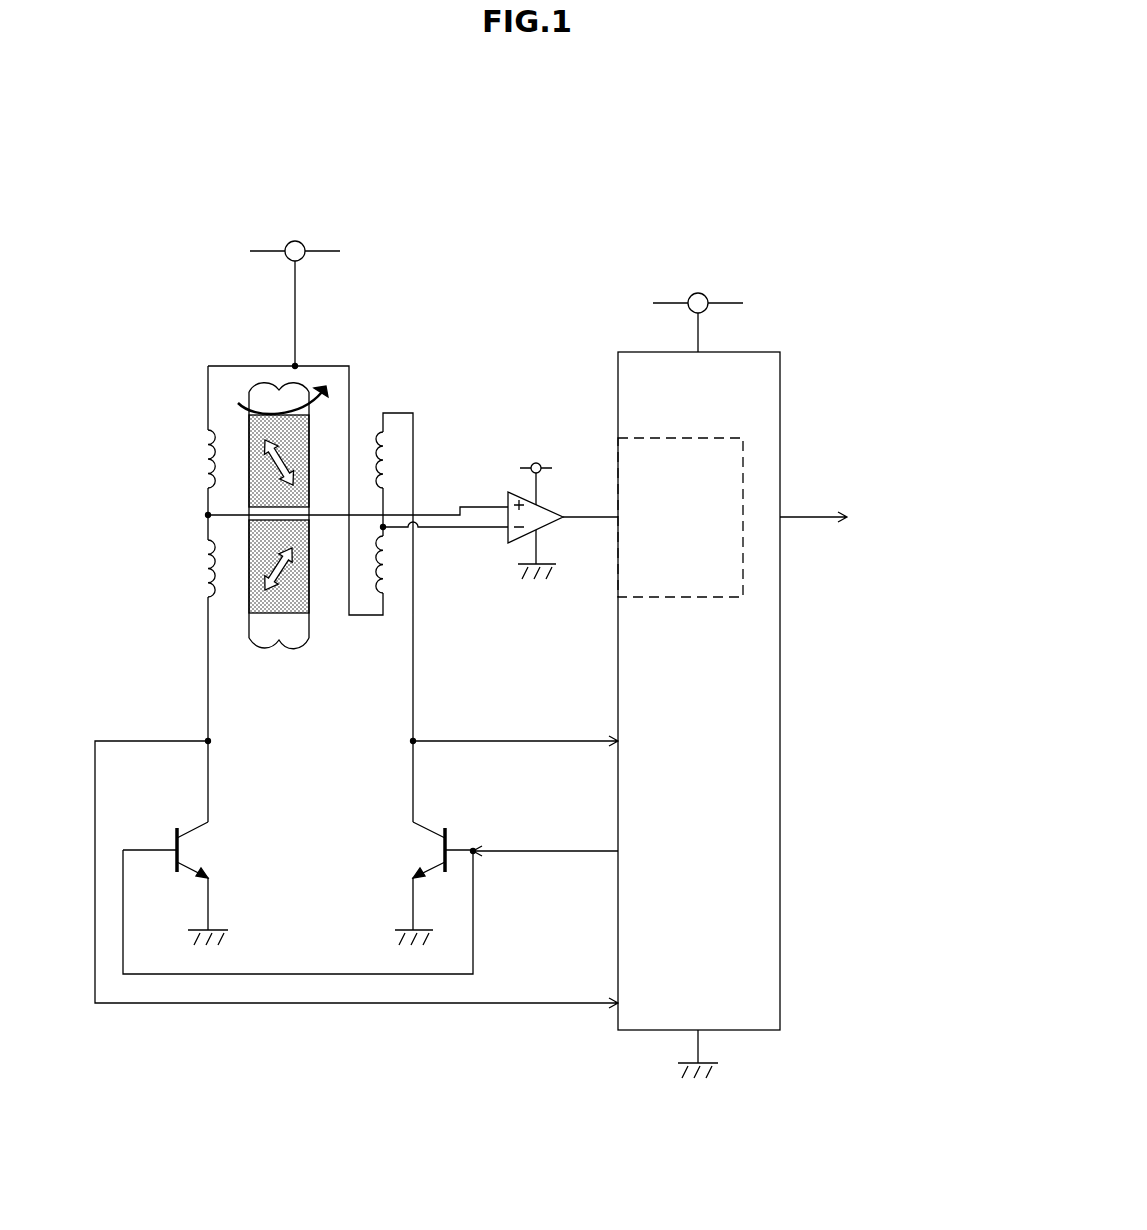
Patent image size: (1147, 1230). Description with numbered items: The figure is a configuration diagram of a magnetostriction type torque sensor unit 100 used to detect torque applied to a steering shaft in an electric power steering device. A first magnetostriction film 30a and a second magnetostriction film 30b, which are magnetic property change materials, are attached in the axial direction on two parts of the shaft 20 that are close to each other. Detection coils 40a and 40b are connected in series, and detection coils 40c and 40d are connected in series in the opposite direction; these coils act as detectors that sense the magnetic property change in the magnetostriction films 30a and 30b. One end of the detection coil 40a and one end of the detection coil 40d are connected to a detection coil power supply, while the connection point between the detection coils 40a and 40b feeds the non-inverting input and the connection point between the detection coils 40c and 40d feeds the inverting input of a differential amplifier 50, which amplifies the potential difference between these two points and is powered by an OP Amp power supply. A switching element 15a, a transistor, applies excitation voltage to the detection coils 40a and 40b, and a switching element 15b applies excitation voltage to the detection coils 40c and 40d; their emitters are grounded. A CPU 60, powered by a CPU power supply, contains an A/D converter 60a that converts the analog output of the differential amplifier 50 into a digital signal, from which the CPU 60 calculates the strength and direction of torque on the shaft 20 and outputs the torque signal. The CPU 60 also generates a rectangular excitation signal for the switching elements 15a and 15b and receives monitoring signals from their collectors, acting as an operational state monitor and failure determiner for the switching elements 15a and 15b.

The magnetostriction type torque sensor unit 100 is at (568, 170).
The shaft 20 is at (265, 628).
The first magnetostriction film 30a is at (298, 597).
The second magnetostriction film 30b is at (305, 437).
The detection coil 40a is at (208, 455).
The detection coil 40b is at (208, 568).
The detection coil 40c is at (382, 462).
The detection coil 40d is at (383, 578).
The differential amplifier 50 is at (550, 525).
The CPU 60 is at (780, 392).
The A/D converter 60a is at (695, 597).
The switching element 15a is at (207, 820).
The switching element 15b is at (415, 822).